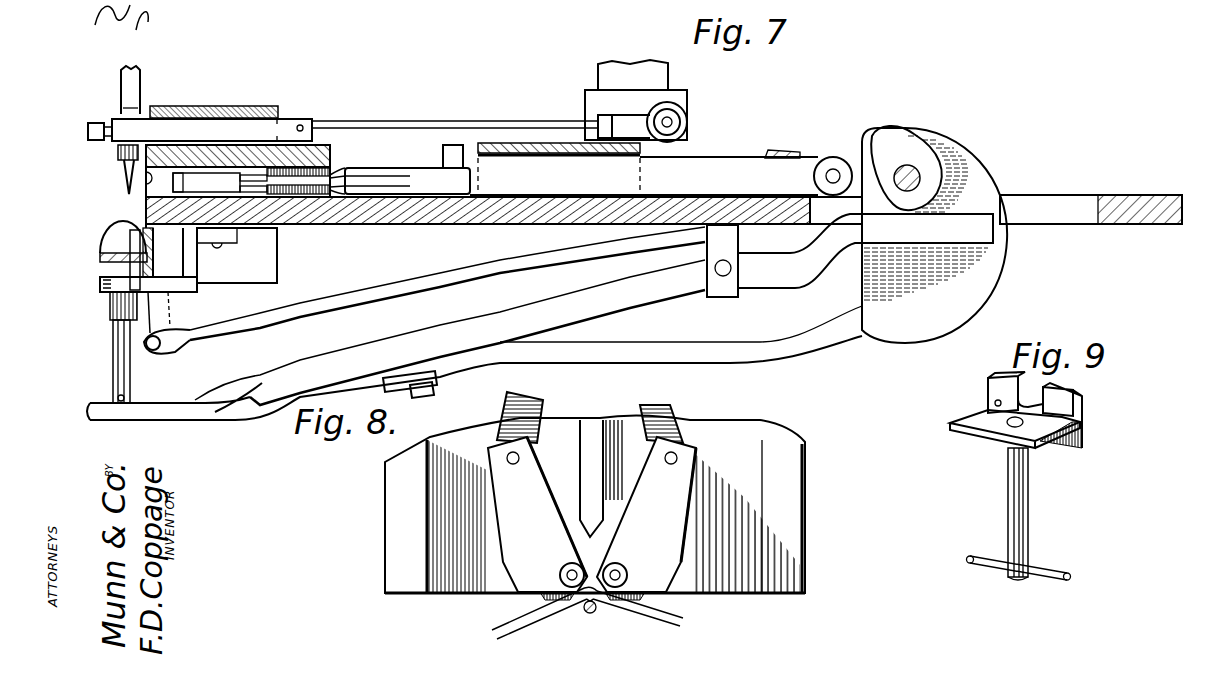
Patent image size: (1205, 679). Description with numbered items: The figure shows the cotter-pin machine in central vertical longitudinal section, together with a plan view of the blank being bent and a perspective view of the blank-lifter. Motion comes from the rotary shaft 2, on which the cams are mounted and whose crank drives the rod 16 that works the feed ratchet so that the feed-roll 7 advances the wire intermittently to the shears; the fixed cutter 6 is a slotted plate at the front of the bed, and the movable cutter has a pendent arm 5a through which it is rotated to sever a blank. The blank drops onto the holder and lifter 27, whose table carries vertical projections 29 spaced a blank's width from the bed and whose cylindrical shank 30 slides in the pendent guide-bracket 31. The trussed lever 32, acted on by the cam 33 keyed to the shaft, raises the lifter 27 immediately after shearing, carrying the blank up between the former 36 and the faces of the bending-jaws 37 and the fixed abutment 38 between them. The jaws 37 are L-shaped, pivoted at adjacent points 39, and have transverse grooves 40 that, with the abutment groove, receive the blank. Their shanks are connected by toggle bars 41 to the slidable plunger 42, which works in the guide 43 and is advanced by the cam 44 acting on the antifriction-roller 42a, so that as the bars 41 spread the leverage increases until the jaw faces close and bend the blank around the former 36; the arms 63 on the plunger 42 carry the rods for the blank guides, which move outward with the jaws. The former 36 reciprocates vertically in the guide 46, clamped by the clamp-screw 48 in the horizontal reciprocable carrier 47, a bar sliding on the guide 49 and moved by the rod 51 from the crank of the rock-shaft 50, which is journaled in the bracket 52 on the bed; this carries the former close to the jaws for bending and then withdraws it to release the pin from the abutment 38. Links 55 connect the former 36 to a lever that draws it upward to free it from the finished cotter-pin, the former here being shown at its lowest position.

In FIG. 7, the rotary shaft 2 is at (917, 168).
In FIG. 7, the pendent arm 5a is at (163, 318).
In FIG. 7, the fixed cutter 6 is at (120, 231).
In FIG. 7, the feed-roll 7 is at (664, 214).
In FIG. 8, the feed-roll 7 is at (716, 513).
In FIG. 7, the rod 16 is at (400, 297).
In FIG. 7, the holder and lifter 27 is at (128, 242).
In FIG. 9, the holder and lifter 27 is at (1015, 429).
In FIG. 7, the vertical projections 29 is at (128, 258).
In FIG. 9, the vertical projections 29 is at (1035, 410).
In FIG. 7, the cylindrical shank 30 is at (114, 358).
In FIG. 9, the cylindrical shank 30 is at (1019, 514).
In FIG. 7, the guide-bracket 31 is at (237, 255).
In FIG. 7, the trussed lever 32 is at (450, 332).
In FIG. 7, the cam 33 is at (882, 133).
In FIG. 7, the former 36 is at (125, 177).
In FIG. 8, the former 36 is at (585, 614).
In FIG. 7, the bending-jaws 37 is at (124, 199).
In FIG. 8, the bending-jaws 37 is at (592, 514).
In FIG. 8, the fixed abutment 38 is at (590, 474).
In FIG. 8, the pivot points 39 is at (568, 570).
In FIG. 7, the transverse grooves 40 is at (413, 182).
In FIG. 7, the bars 41 is at (396, 160).
In FIG. 8, the bars 41 is at (590, 417).
In FIG. 7, the slidable plunger 42 is at (644, 176).
In FIG. 7, the antifriction-roller 42a is at (834, 156).
In FIG. 7, the guide 43 is at (539, 157).
In FIG. 7, the cam 44 is at (934, 235).
In FIG. 7, the guide 46 is at (118, 157).
In FIG. 7, the horizontal reciprocable carrier 47 is at (212, 130).
In FIG. 7, the clamp-screw 48 is at (88, 131).
In FIG. 7, the guide 49 is at (214, 104).
In FIG. 7, the rock-shaft 50 is at (673, 121).
In FIG. 7, the rod 51 is at (474, 117).
In FIG. 7, the bracket 52 is at (585, 98).
In FIG. 7, the links 55 is at (141, 96).
In FIG. 7, the arms 63 is at (768, 148).